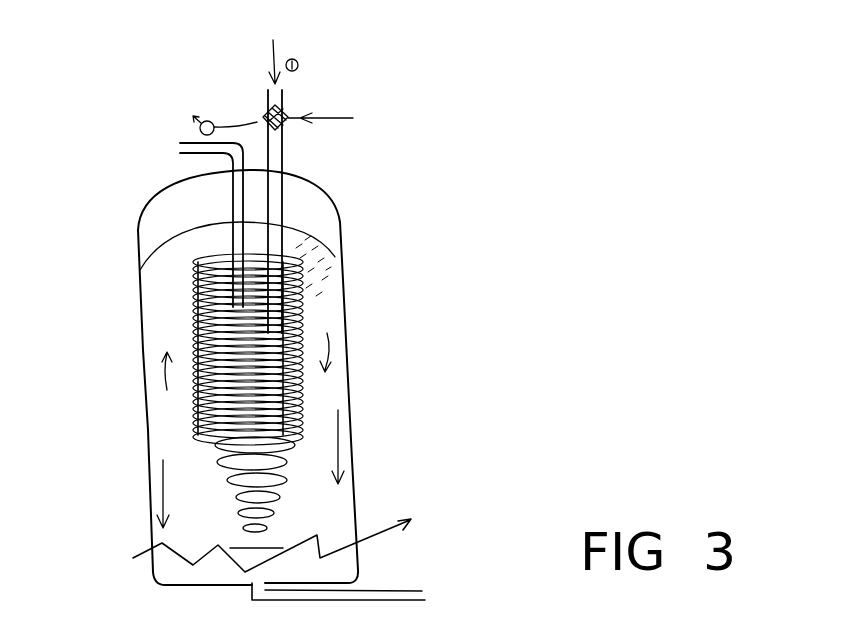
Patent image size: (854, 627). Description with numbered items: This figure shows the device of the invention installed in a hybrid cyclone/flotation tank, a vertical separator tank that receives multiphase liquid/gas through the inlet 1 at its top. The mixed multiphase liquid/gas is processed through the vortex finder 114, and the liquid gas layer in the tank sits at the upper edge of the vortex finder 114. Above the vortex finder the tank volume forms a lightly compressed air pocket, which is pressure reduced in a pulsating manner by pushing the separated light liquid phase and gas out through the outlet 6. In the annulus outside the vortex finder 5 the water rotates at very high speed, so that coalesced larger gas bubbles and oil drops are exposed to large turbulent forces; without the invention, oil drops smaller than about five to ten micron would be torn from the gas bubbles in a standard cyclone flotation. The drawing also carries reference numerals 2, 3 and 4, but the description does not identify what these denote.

The inlet 1 is at (285, 168).
The gas supply line 2 is at (333, 113).
The vessel 3 is at (333, 293).
The sensor/valve 4 is at (213, 106).
The vortex finder 5 is at (193, 415).
The outlet 6 is at (178, 148).
The vortex finder 114 is at (193, 335).